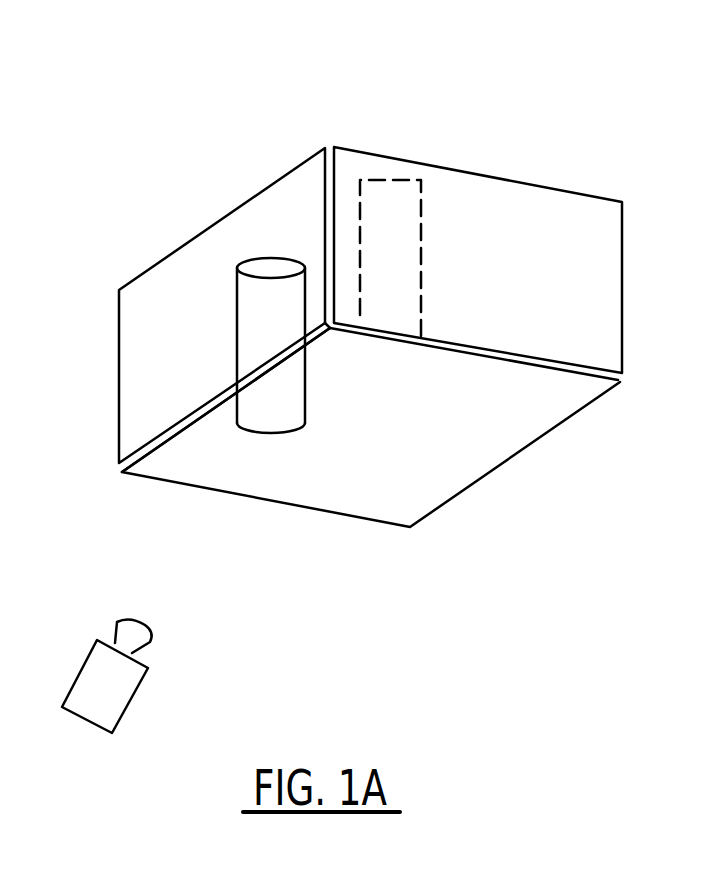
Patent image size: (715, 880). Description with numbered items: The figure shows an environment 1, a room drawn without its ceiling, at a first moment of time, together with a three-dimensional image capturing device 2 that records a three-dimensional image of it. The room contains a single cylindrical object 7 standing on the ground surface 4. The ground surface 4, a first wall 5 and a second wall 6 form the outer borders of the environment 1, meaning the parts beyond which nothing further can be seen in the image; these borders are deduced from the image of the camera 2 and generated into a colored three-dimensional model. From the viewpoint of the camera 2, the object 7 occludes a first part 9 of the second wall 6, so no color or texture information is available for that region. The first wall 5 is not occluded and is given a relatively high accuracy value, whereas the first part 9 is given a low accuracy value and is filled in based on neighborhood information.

The environment 1 is at (568, 132).
The 3D image capturing device 2 is at (112, 693).
The ground surface 4 is at (213, 472).
The first wall 5 is at (136, 349).
The second wall 6 is at (605, 315).
The cylindrical object 7 is at (283, 383).
The first part of the outer border 9 is at (397, 183).